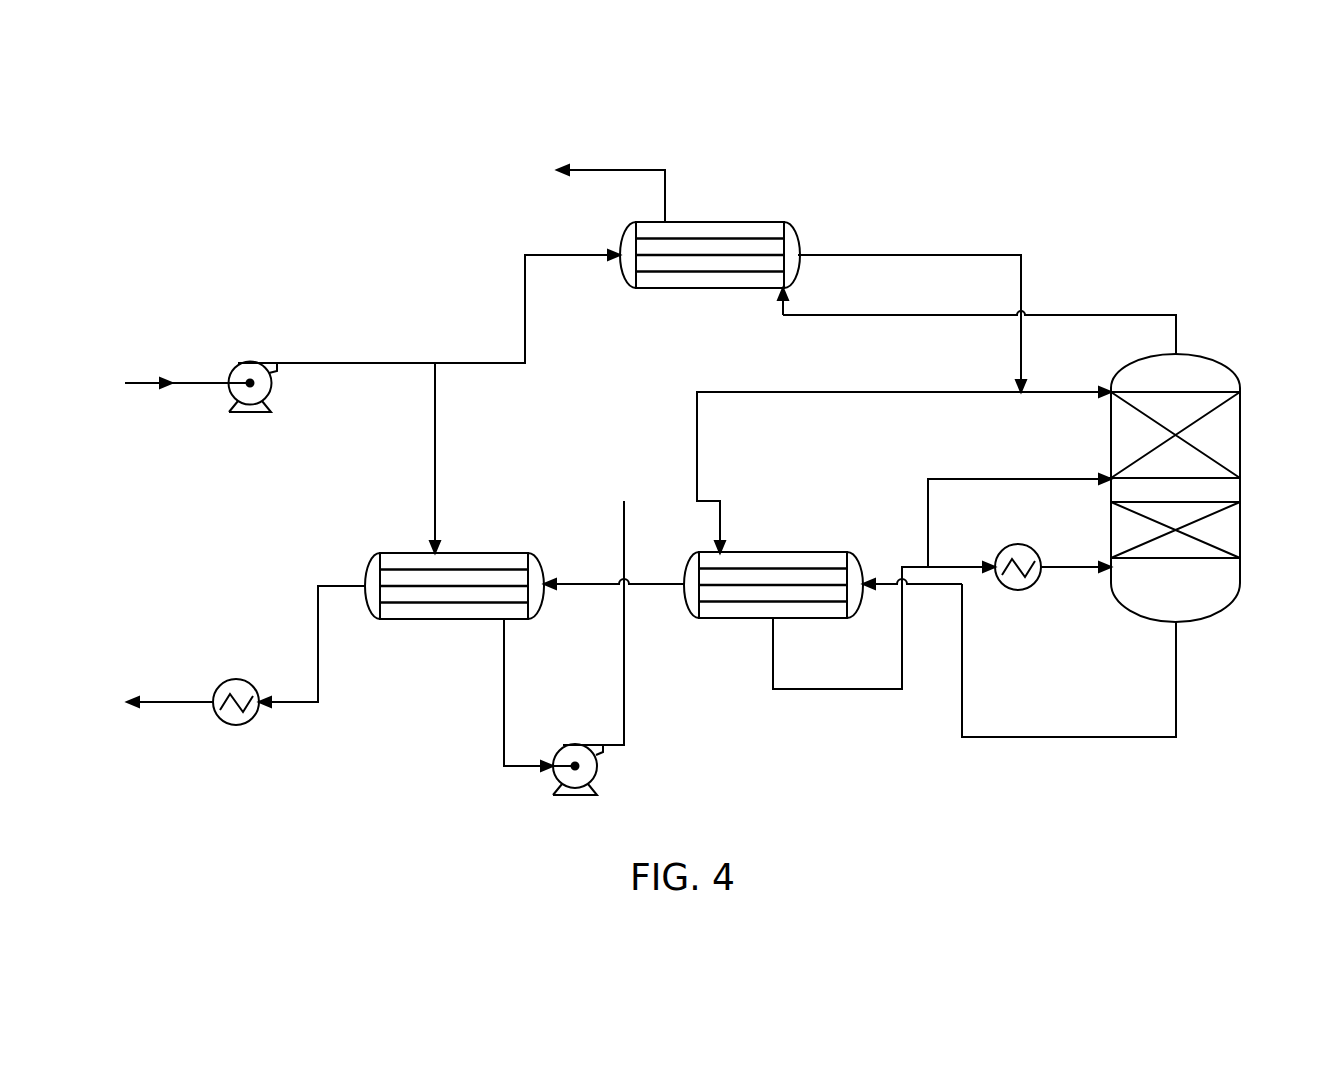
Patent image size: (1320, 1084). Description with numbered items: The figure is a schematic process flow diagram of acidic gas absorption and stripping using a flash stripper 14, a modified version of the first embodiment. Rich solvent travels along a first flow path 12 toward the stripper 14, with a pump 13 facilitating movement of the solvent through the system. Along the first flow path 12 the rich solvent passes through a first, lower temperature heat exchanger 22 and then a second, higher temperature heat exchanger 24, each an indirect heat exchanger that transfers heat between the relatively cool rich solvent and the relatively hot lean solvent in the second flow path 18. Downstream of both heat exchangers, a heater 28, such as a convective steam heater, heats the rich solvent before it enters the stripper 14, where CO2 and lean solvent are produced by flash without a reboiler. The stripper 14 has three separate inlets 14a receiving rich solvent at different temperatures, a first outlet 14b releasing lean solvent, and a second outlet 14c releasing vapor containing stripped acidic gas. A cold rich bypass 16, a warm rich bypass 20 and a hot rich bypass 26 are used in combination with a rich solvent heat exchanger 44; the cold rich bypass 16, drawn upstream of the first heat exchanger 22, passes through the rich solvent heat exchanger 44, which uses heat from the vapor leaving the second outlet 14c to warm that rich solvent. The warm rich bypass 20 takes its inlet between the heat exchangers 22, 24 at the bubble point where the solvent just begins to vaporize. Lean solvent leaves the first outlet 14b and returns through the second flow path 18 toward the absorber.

The first flow path 12 is at (146, 378).
The pump 13 is at (598, 770).
The flash stripper 14 is at (1238, 376).
The inlet 14a is at (1111, 390).
The first outlet 14b is at (1176, 622).
The second outlet 14c is at (1176, 354).
The cold rich solvent bypass 16 is at (505, 365).
The second flow path 18 is at (186, 705).
The warm rich solvent bypass 20 is at (697, 453).
The first heat exchanger 22 is at (372, 563).
The second heat exchanger 24 is at (795, 619).
The hot rich bypass 26 is at (1025, 478).
The heater 28 is at (1018, 590).
The rich solvent heat exchanger 44 is at (683, 290).